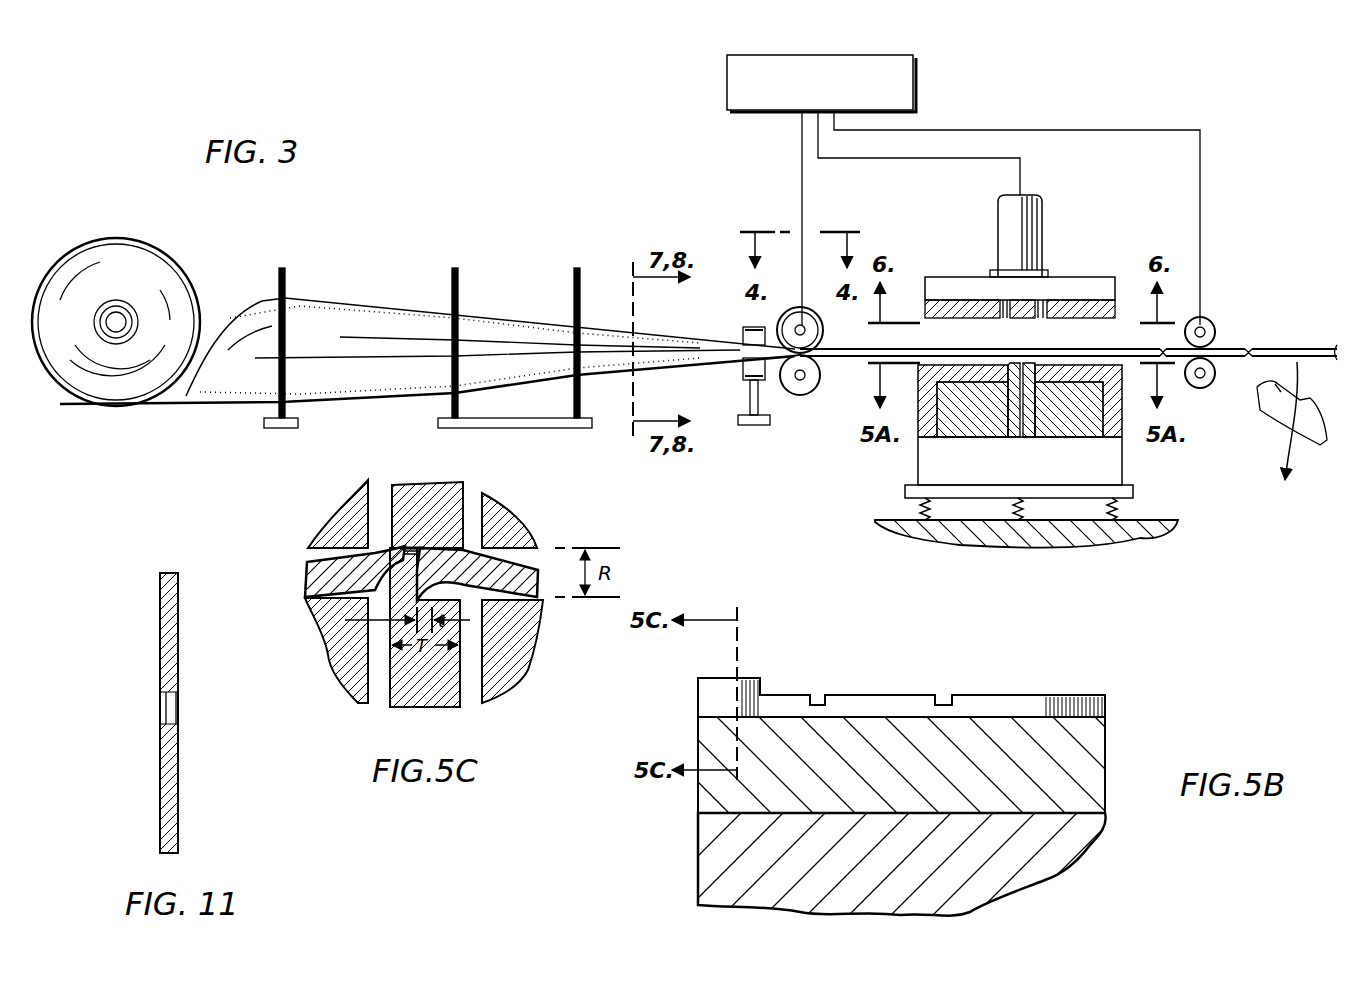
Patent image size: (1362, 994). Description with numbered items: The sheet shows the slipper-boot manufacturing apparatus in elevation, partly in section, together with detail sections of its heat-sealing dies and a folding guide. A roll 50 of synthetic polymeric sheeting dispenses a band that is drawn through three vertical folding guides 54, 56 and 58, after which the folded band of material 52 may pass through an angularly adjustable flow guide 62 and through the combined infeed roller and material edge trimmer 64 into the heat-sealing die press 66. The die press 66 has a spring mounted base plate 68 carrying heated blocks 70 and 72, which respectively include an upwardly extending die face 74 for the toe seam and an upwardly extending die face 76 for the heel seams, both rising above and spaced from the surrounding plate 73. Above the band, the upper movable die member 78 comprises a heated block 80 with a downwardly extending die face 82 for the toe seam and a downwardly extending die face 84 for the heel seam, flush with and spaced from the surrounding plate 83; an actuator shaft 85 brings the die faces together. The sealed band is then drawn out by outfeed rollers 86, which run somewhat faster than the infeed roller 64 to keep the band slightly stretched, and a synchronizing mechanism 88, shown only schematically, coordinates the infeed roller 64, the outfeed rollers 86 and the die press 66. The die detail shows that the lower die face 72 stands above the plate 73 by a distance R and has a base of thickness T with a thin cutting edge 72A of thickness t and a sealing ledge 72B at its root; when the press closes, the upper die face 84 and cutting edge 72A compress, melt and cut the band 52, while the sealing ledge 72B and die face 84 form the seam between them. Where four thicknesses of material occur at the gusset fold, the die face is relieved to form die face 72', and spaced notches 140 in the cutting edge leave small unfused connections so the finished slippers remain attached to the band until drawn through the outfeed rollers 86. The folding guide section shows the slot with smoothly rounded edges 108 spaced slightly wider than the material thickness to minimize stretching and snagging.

In FIG. 3, the roll 50 is at (160, 285).
In FIG. 3, the folded band of material 52 is at (250, 313).
In FIG. 5C, the folded band of material 52 is at (306, 566).
In FIG. 3, the folding guide 54 is at (285, 282).
In FIG. 11, the folding guide 54 is at (222, 713).
In FIG. 3, the folding guide 56 is at (458, 283).
In FIG. 11, the folding guide 56 is at (222, 713).
In FIG. 3, the folding guide 58 is at (574, 283).
In FIG. 11, the folding guide 58 is at (222, 713).
In FIG. 3, the angularly adjustable flow guide 62 is at (743, 330).
In FIG. 3, the combined infeed roller and material edge trimmer 64 is at (794, 325).
In FIG. 3, the heat-sealing die press 66 is at (1028, 455).
In FIG. 3, the spring mounted base plate 68 is at (930, 458).
In FIG. 5B, the spring mounted base plate 68 is at (1040, 868).
In FIG. 3, the heated block 70 is at (965, 412).
In FIG. 3, the heated block / lower die face 72 is at (1069, 424).
In FIG. 5C, the heated block / lower die face 72 is at (440, 647).
In FIG. 5B, the heated block / lower die face 72 is at (901, 675).
In FIG. 5C, the cutting edge 72A is at (410, 546).
In FIG. 5C, the sealing ledge 72B is at (462, 612).
In FIG. 5B, the relieved die face 72' is at (880, 678).
In FIG. 3, the surrounding plate 73 is at (1115, 382).
In FIG. 5C, the surrounding plate 73 is at (348, 640).
In FIG. 5B, the surrounding plate 73 is at (1085, 762).
In FIG. 3, the upwardly extending die face 74 is at (1006, 373).
In FIG. 3, the upwardly extending die face 76 is at (1036, 373).
In FIG. 3, the upper movable die member 78 is at (1036, 267).
In FIG. 3, the heated block 80 is at (988, 291).
In FIG. 3, the downwardly extending die face 82 is at (1003, 318).
In FIG. 3, the surrounding plate 83 is at (1135, 305).
In FIG. 5C, the surrounding plate 83 is at (348, 510).
In FIG. 3, the downwardly extending die face 84 is at (1040, 318).
In FIG. 5C, the downwardly extending die face 84 is at (452, 505).
In FIG. 3, the actuator shaft 85 is at (1040, 205).
In FIG. 3, the outfeed rollers 86 is at (1214, 332).
In FIG. 3, the synchronizing mechanism 88 is at (913, 80).
In FIG. 11, the smoothly rounded edges 108 is at (178, 706).
In FIG. 5B, the notches 140 is at (818, 695).